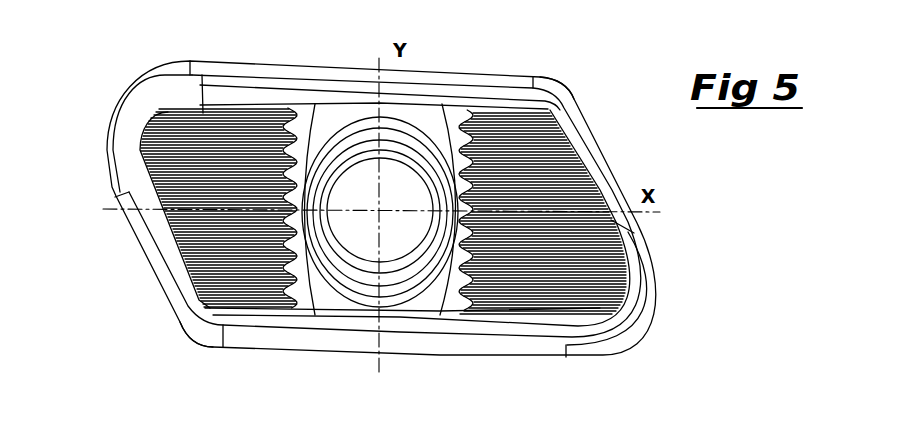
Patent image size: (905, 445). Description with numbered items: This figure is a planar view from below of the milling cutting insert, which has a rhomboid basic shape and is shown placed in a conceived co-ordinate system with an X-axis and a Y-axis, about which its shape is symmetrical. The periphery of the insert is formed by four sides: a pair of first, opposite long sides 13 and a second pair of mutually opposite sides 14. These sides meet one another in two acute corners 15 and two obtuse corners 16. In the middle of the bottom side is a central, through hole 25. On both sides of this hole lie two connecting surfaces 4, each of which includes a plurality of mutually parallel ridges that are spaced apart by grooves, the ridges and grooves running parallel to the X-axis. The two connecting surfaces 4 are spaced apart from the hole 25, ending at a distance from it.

The connecting surface 4 is at (253, 285).
The first periphery side 13 is at (338, 55).
The second periphery side 14 is at (623, 157).
The acute corner 15 is at (110, 85).
The obtuse corner 16 is at (573, 72).
The through hole 25 is at (387, 250).